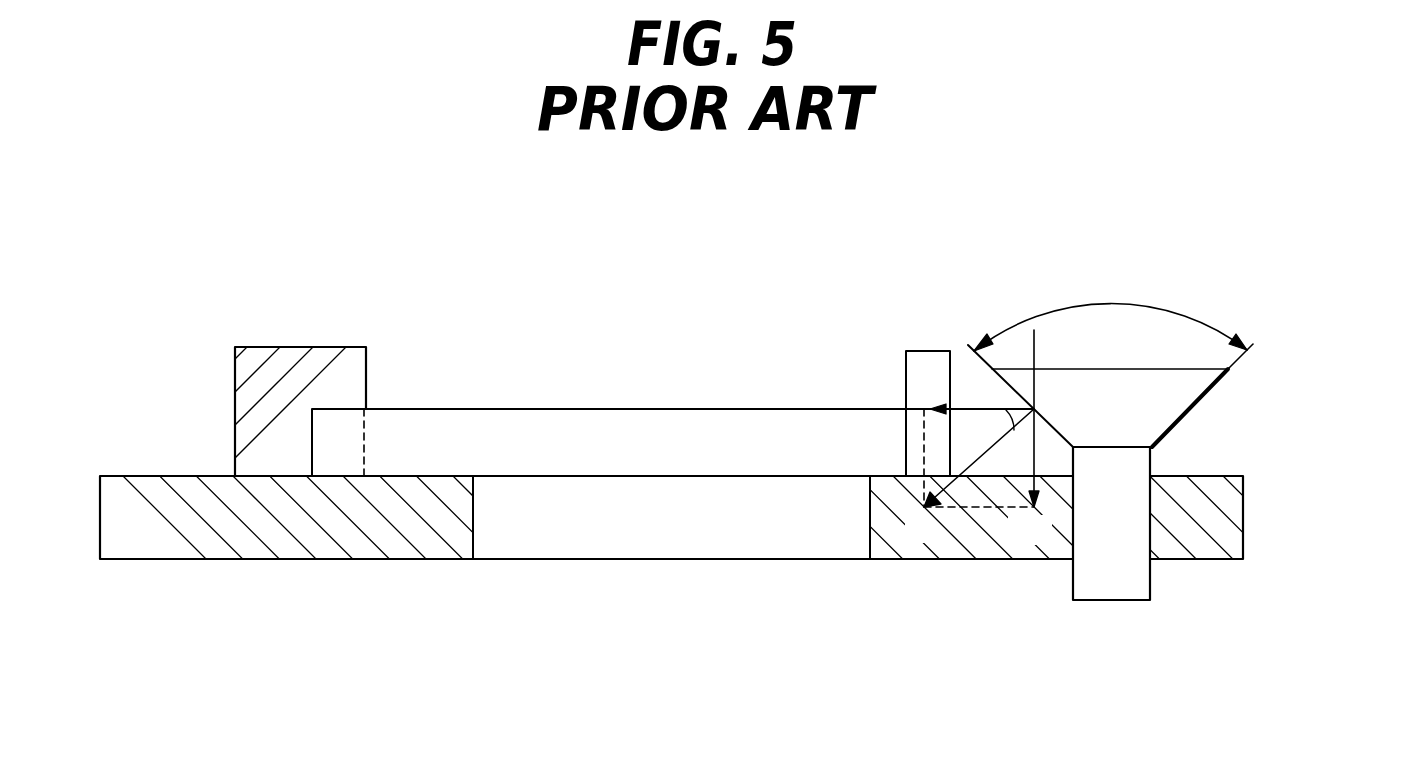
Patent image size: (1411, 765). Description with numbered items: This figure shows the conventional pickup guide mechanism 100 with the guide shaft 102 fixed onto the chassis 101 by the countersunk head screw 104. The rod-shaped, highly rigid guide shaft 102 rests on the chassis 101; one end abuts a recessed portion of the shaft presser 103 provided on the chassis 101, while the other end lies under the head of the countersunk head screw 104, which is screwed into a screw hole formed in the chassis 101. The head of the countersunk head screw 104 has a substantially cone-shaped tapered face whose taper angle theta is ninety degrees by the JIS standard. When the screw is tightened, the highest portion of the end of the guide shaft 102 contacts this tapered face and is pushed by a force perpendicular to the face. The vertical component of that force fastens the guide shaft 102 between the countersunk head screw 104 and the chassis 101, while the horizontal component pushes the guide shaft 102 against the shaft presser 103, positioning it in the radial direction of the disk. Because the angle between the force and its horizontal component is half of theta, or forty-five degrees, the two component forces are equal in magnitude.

The pickup guide mechanism 100 is at (742, 272).
The chassis 101 is at (280, 533).
The guide shaft 102 is at (631, 437).
The shaft presser 103 is at (282, 365).
The countersunk head screw 104 is at (1188, 397).